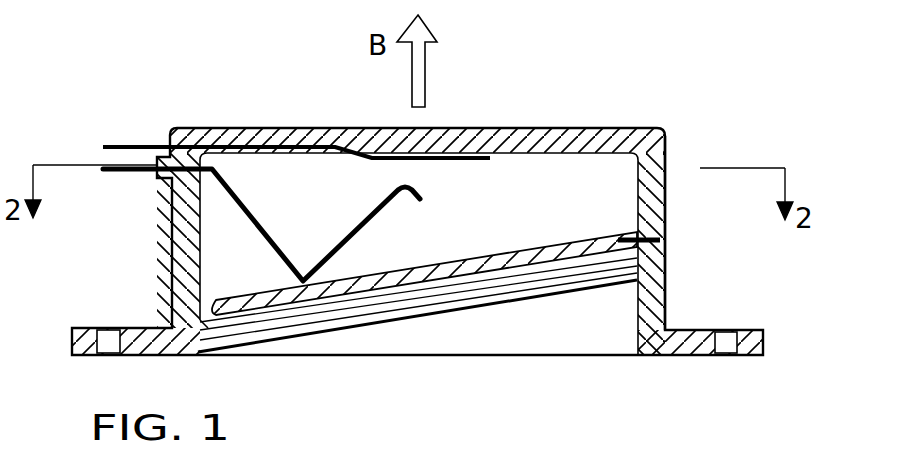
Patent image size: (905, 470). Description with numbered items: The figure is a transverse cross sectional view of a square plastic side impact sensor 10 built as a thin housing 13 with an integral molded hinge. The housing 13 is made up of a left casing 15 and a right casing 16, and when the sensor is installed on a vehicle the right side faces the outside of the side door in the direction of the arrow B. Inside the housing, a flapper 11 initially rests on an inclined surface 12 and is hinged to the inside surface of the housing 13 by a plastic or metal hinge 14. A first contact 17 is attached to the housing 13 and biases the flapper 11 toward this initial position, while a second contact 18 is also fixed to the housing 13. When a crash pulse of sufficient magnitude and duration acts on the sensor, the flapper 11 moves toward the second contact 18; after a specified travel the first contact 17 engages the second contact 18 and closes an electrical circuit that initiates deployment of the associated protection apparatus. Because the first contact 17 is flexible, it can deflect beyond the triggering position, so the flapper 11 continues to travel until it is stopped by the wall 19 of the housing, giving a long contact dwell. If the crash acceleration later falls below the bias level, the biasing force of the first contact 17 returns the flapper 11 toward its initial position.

The side impact sensor 10 is at (170, 140).
The flapper 11 is at (270, 298).
The inclined surface 12 is at (418, 250).
The housing 13 is at (633, 164).
The hinge 14 is at (621, 238).
The left casing 15 is at (661, 212).
The right casing 16 is at (666, 166).
The first contact 17 is at (342, 247).
The second contact 18 is at (436, 160).
The wall 19 is at (172, 195).